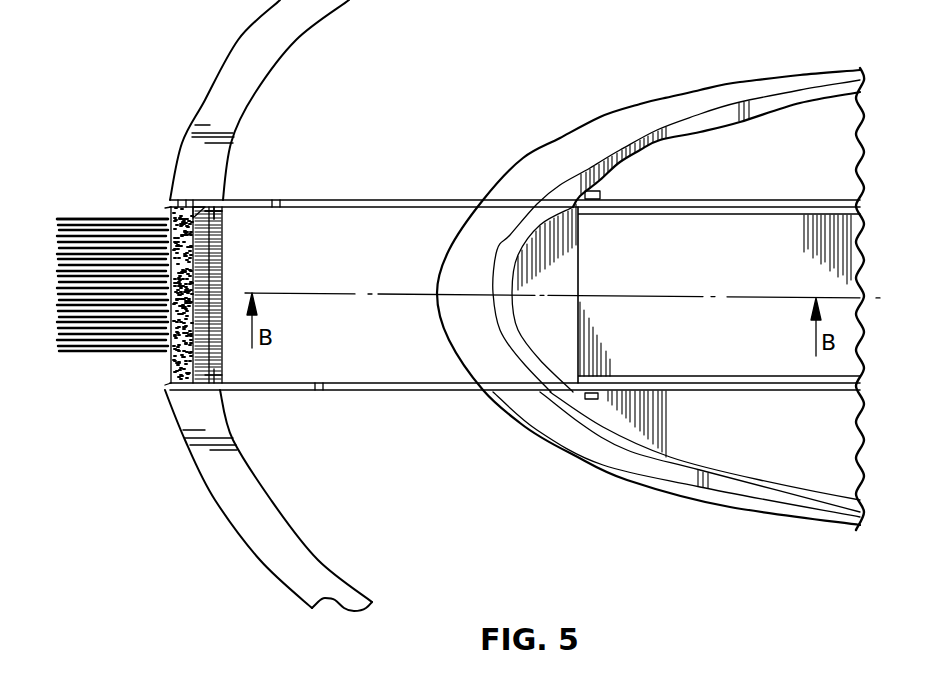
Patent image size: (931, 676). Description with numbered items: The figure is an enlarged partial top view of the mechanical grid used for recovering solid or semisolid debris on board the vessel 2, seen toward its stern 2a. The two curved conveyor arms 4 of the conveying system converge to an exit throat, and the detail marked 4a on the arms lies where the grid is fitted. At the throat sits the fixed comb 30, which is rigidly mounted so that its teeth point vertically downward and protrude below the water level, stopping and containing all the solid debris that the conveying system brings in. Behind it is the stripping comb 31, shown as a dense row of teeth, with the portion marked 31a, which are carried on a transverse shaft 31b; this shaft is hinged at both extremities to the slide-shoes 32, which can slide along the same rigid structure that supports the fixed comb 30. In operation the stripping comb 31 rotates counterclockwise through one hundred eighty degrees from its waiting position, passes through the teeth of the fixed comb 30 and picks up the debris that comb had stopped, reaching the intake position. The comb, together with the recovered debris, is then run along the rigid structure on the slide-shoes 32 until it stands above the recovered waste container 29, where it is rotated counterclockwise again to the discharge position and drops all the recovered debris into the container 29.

The vessel 2 is at (641, 104).
The stern 2a is at (503, 180).
The conveyor arms 4 is at (228, 82).
The guide wall edge 4a is at (165, 213).
The recovered waste container 29 is at (720, 237).
The fixed comb 30 is at (150, 216).
The stripping comb 31 is at (108, 355).
The brush bristles 31a is at (96, 234).
The transverse shaft 31b is at (221, 216).
The slide-shoes 32 is at (222, 211).